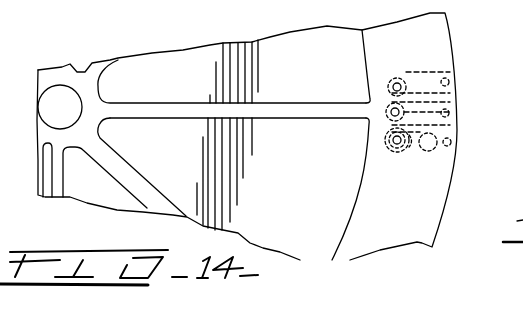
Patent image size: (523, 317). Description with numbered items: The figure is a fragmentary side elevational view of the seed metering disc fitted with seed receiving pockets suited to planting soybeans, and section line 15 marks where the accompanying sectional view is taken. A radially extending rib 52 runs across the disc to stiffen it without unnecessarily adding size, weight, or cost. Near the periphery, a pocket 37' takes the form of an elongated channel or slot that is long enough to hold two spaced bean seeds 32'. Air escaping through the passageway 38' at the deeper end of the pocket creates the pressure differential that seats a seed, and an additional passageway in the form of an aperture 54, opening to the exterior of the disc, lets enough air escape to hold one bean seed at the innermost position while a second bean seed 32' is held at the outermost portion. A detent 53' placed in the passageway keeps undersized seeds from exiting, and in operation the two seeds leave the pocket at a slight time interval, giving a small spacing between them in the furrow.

The radially extending rib 52 is at (133, 108).
The aperture 54 is at (398, 82).
The detent 53' is at (471, 73).
The section line 15- 15 is at (391, 111).
The bean seed 32' is at (413, 162).
The pocket 37' is at (408, 161).
The passageway 38' is at (475, 150).